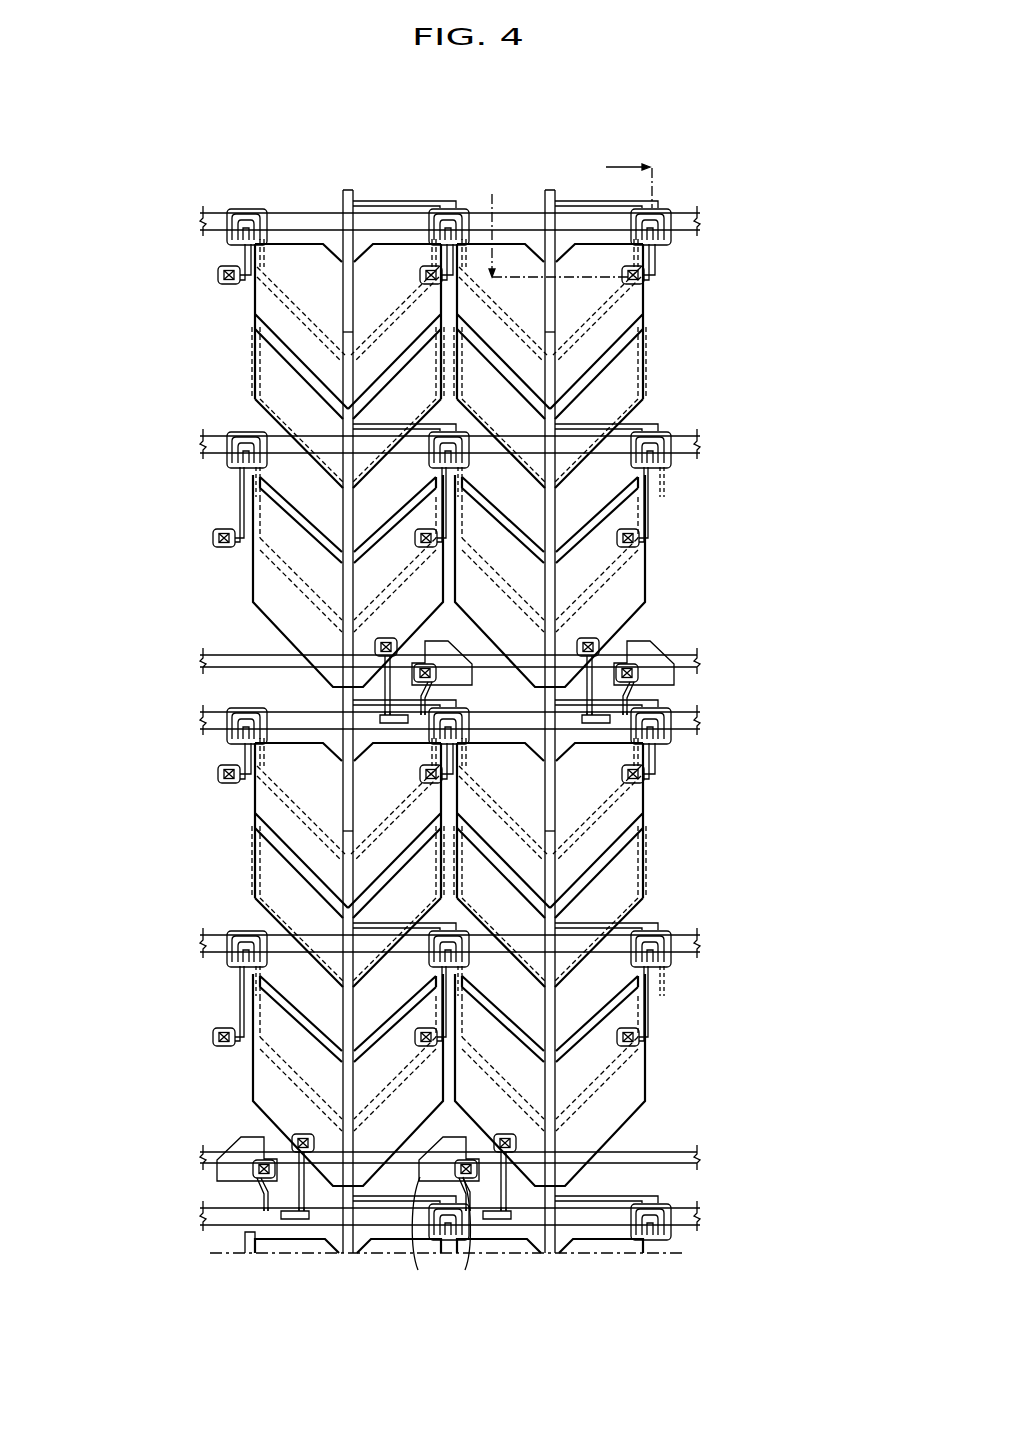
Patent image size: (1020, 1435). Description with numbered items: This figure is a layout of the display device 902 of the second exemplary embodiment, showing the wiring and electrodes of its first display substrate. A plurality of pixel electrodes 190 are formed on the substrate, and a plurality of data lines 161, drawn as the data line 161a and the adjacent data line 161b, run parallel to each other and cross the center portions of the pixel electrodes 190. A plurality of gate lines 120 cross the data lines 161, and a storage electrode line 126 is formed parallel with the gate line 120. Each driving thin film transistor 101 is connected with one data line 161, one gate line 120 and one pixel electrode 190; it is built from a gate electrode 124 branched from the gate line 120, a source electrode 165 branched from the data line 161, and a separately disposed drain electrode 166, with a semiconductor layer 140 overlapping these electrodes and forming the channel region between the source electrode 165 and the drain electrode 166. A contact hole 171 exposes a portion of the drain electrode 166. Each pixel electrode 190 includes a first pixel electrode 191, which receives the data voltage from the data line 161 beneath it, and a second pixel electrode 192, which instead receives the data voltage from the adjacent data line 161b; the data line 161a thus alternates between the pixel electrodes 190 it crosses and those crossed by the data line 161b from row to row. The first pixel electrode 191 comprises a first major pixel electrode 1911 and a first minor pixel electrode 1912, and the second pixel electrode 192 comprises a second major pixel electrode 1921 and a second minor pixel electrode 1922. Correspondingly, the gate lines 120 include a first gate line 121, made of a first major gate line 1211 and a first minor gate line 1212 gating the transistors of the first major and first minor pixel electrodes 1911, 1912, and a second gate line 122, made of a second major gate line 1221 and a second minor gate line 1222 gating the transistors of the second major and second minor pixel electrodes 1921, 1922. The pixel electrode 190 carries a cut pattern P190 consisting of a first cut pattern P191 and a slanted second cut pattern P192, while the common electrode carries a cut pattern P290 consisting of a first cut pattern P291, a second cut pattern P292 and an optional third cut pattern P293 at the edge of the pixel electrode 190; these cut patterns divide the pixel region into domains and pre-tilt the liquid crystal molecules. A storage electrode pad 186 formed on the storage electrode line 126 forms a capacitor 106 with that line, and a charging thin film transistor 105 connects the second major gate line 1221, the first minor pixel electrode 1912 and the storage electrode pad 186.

The display device 902 is at (469, 89).
The data line 161 is at (524, 138).
The data line 161a is at (350, 191).
The data line 161b is at (552, 191).
The semiconductor layer 140 is at (664, 208).
The source electrode 165 is at (672, 216).
The first major gate line 1211 is at (700, 220).
The driving thin film transistor 101 is at (678, 243).
The gate electrode 124 is at (665, 250).
The drain electrode 166 is at (657, 255).
The contact hole 171 is at (637, 290).
The first major pixel electrode 1911 is at (256, 297).
The first minor pixel electrode 1912 is at (255, 360).
The first pixel electrode 191 is at (112, 330).
The pixel electrode 190 is at (67, 870).
The first minor gate line 1212 is at (700, 445).
The first gate line 121 is at (826, 237).
The gate line 120 is at (877, 955).
The storage electrode line 126 is at (683, 656).
The second major gate line 1221 is at (700, 720).
The charging thin film transistor 105 is at (622, 735).
The second major pixel electrode 1921 is at (256, 798).
The second minor pixel electrode 1922 is at (255, 862).
The second pixel electrode 192 is at (112, 832).
The second gate line 122 is at (826, 733).
The second minor gate line 1222 is at (700, 945).
The second cut pattern P192 is at (652, 1000).
The first cut pattern P191 is at (560, 1068).
The cut pattern P190 is at (800, 1012).
The third cut pattern P293 is at (240, 1005).
The second cut pattern P292 is at (278, 1073).
The first cut pattern P291 is at (285, 1135).
The cut pattern P290 is at (112, 1033).
The storage electrode pad 186 is at (445, 1008).
The capacitor 106 is at (474, 1303).